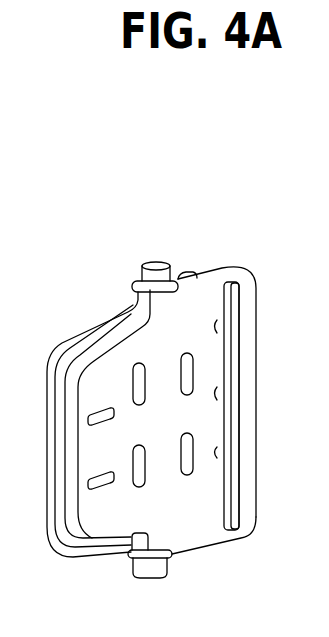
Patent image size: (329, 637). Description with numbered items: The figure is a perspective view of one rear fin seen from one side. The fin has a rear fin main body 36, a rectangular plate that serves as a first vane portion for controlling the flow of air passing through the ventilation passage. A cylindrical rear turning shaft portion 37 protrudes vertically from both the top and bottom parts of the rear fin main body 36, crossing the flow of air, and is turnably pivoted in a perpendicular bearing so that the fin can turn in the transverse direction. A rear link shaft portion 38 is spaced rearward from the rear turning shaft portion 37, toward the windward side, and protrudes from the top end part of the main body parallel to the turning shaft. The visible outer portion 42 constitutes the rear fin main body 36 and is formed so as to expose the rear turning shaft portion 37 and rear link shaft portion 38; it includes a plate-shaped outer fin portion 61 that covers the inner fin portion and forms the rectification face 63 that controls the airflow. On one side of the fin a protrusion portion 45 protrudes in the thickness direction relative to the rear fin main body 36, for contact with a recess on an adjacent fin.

The rear fin main body 36 is at (259, 453).
The rear turning shaft portion 37 is at (155, 261).
The rear link shaft portion 38 is at (184, 271).
The outer portion 42 is at (256, 354).
The protrusion portion 45 is at (233, 323).
The outer fin portion 61 is at (218, 532).
The rectification face 63 is at (212, 417).